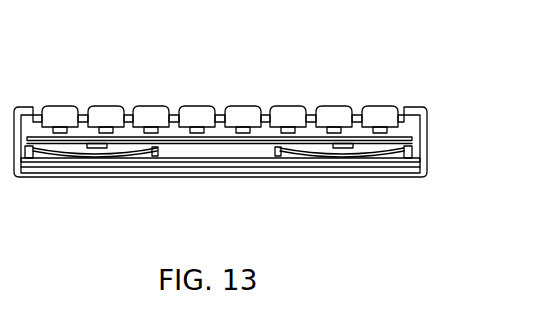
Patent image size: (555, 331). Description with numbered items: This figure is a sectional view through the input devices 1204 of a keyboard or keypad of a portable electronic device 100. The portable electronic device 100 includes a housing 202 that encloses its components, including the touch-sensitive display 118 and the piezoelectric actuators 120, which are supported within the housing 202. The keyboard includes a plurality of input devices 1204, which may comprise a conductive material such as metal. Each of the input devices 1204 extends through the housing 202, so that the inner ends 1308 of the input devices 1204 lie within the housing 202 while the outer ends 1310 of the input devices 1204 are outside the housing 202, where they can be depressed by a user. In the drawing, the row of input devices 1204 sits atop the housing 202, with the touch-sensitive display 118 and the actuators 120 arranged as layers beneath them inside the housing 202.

The portable electronic device 100 is at (220, 133).
The touch-sensitive display 118 is at (223, 137).
The piezoelectric actuator 120 is at (75, 158).
The housing 202 is at (285, 175).
The input device 1204 is at (397, 70).
The inner end 1308 is at (157, 130).
The outer end 1310 is at (160, 108).